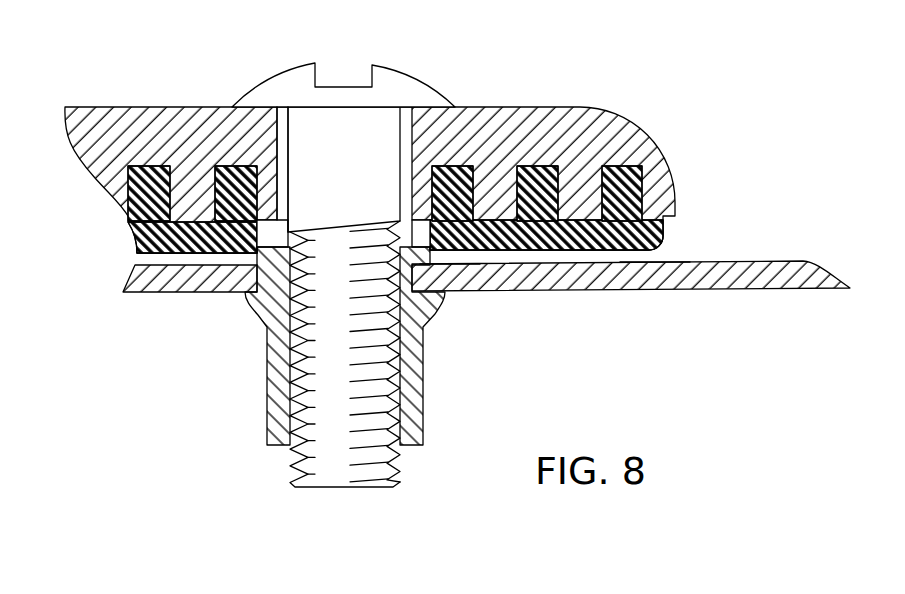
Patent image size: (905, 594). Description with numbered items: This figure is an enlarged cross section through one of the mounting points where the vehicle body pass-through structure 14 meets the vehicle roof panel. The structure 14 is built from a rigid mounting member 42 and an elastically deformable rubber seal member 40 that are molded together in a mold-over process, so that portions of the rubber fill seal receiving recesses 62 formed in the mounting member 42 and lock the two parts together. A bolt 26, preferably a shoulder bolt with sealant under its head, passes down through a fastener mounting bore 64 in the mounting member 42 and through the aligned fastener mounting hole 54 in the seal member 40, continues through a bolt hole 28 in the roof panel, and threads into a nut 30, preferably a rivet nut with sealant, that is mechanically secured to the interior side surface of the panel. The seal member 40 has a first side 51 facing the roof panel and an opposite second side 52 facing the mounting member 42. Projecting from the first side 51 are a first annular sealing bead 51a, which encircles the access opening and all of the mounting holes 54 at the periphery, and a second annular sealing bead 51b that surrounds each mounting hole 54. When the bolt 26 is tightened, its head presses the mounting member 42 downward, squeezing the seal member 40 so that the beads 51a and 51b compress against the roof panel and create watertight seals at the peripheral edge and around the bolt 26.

The vehicle body pass-through structure 14 is at (563, 64).
The bolt 26 is at (272, 78).
The bolt hole 28 is at (386, 266).
The nut 30 is at (266, 380).
The seal member 40 is at (672, 238).
The rigid mounting member 42 is at (648, 125).
The first side 51 is at (556, 266).
The first annular sealing bead 51a is at (654, 260).
The second annular sealing bead 51b is at (449, 264).
The second side 52 is at (665, 200).
The fastener mounting hole 54 is at (257, 193).
The seal receiving recess 62 is at (138, 166).
The fastener mounting bore 64 is at (283, 147).